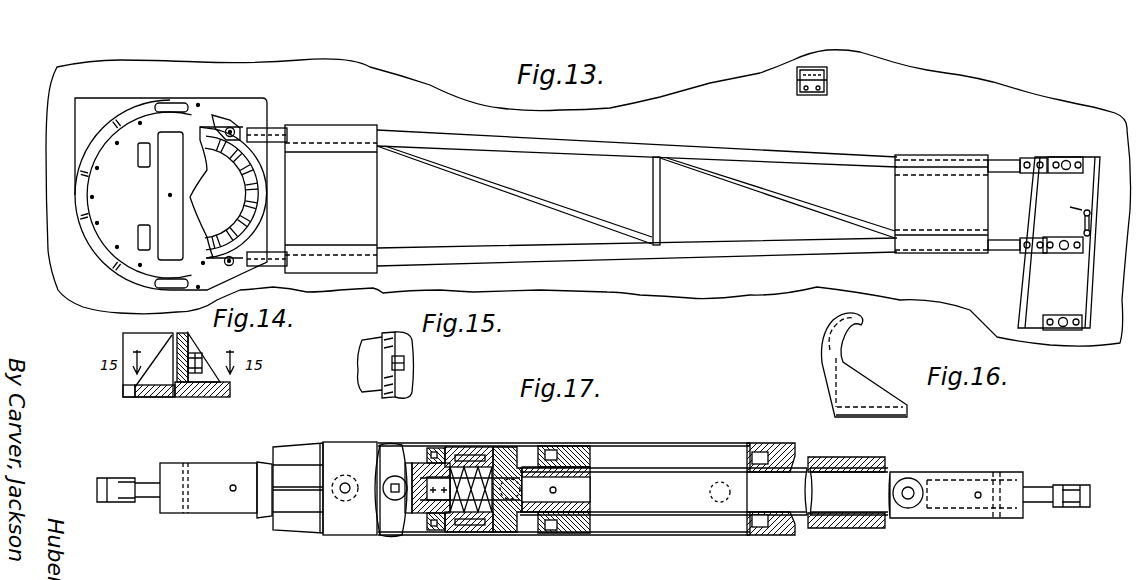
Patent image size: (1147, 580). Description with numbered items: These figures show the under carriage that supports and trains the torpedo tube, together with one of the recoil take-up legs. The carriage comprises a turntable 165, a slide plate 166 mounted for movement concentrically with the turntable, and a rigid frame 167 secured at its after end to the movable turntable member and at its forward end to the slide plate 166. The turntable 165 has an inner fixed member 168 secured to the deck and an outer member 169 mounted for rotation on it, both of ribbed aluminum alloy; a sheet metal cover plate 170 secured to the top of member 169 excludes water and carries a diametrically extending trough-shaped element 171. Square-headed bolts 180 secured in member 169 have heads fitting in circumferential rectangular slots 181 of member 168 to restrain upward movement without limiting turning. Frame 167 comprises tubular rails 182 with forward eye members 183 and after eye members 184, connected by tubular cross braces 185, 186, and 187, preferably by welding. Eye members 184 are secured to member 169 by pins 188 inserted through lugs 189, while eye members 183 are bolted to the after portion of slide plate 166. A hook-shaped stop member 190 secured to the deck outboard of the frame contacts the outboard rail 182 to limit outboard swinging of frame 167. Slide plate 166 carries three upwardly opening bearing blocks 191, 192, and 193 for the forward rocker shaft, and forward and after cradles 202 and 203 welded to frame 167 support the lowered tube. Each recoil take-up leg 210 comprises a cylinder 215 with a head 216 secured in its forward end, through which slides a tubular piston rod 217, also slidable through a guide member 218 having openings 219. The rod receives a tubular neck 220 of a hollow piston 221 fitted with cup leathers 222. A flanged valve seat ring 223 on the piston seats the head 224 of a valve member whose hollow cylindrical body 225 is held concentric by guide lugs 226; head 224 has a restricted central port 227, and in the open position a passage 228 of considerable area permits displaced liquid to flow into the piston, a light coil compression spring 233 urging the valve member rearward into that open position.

In FIG. 13, the turntable 165 is at (106, 105).
In FIG. 14, the turntable 165 is at (107, 348).
In FIG. 15, the turntable 165 is at (334, 359).
In FIG. 13, the slide plate 166 is at (1075, 188).
In FIG. 13, the rigid frame 167 is at (716, 141).
In FIG. 13, the inner fixed member 168 is at (248, 180).
In FIG. 14, the inner fixed member 168 is at (138, 396).
In FIG. 15, the inner fixed member 168 is at (372, 380).
In FIG. 13, the outer member 169 is at (248, 228).
In FIG. 14, the outer member 169 is at (212, 396).
In FIG. 15, the outer member 169 is at (400, 385).
In FIG. 13, the cover plate 170 is at (153, 106).
In FIG. 13, the trough-shaped element 171 is at (165, 178).
In FIG. 14, the square-headed bolts 180 is at (198, 360).
In FIG. 15, the square-headed bolts 180 is at (404, 366).
In FIG. 14, the slots 181 is at (179, 396).
In FIG. 15, the slots 181 is at (395, 352).
In FIG. 13, the rails 182 is at (613, 147).
In FIG. 13, the eye members 183 is at (1024, 160).
In FIG. 13, the eye members 184 is at (240, 131).
In FIG. 13, the cross brace 185 is at (510, 196).
In FIG. 13, the cross brace 186 is at (657, 212).
In FIG. 13, the cross brace 187 is at (808, 212).
In FIG. 13, the pins 188 is at (238, 128).
In FIG. 13, the lugs 189 is at (228, 124).
In FIG. 13, the hook-shaped stop member 190 is at (827, 80).
In FIG. 16, the hook-shaped stop member 190 is at (832, 383).
In FIG. 13, the bearing block 191 is at (1070, 176).
In FIG. 13, the bearing block 192 is at (1065, 255).
In FIG. 13, the bearing block 193 is at (1068, 332).
In FIG. 13, the forward cradle 202 is at (920, 155).
In FIG. 13, the after cradle 203 is at (322, 160).
In FIG. 17, the recoil take-up leg 210 is at (627, 442).
In FIG. 17, the cylinder 215 is at (685, 445).
In FIG. 17, the head 216 is at (790, 537).
In FIG. 17, the tubular piston rod 217 is at (710, 516).
In FIG. 17, the guide member 218 is at (556, 536).
In FIG. 17, the openings 219 is at (560, 450).
In FIG. 17, the tubular neck 220 is at (545, 514).
In FIG. 17, the piston 221 is at (497, 446).
In FIG. 17, the cup leathers 222 is at (452, 462).
In FIG. 17, the flanged valve seat ring 223 is at (428, 455).
In FIG. 17, the head 224 is at (400, 520).
In FIG. 17, the hollow cylindrical body 225 is at (432, 530).
In FIG. 17, the guide lugs 226 is at (380, 530).
In FIG. 17, the port 227 is at (380, 507).
In FIG. 17, the passage 228 is at (370, 446).
In FIG. 17, the coil compression spring 233 is at (462, 452).